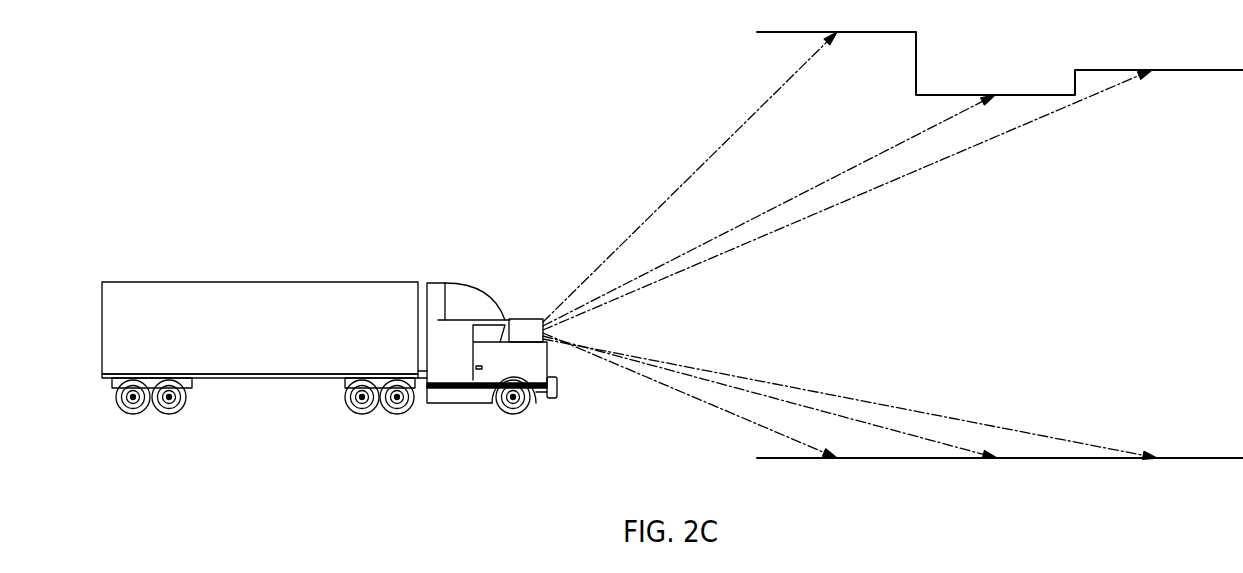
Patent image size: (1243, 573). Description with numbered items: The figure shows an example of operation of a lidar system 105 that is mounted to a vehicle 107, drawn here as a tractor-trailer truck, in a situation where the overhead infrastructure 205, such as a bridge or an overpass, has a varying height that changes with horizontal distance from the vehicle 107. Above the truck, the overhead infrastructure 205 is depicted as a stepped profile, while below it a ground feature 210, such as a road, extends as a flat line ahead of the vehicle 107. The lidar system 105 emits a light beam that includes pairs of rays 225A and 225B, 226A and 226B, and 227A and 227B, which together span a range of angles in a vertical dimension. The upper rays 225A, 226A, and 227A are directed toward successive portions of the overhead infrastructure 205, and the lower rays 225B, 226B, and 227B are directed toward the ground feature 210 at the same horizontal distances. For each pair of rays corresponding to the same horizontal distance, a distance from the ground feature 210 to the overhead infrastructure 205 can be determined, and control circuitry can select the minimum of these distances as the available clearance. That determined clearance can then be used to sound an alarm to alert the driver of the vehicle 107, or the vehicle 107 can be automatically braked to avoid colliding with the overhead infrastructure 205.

The lidar system 105 is at (410, 469).
The vehicle 107 is at (260, 282).
The overhead infrastructure 205 is at (1194, 70).
The ground feature 210 is at (1194, 461).
The ray 225A is at (690, 174).
The ray 225B is at (689, 396).
The ray 226A is at (767, 210).
The ray 226B is at (770, 397).
The ray 227A is at (852, 199).
The ray 227B is at (850, 398).